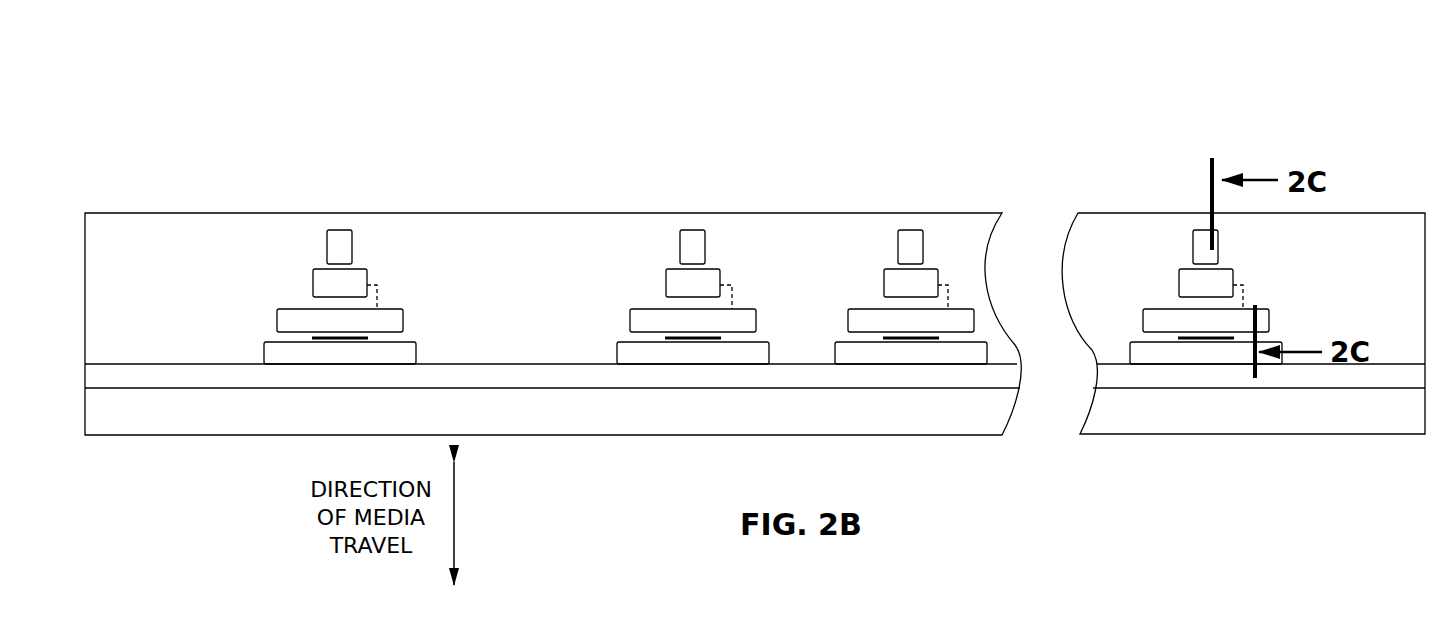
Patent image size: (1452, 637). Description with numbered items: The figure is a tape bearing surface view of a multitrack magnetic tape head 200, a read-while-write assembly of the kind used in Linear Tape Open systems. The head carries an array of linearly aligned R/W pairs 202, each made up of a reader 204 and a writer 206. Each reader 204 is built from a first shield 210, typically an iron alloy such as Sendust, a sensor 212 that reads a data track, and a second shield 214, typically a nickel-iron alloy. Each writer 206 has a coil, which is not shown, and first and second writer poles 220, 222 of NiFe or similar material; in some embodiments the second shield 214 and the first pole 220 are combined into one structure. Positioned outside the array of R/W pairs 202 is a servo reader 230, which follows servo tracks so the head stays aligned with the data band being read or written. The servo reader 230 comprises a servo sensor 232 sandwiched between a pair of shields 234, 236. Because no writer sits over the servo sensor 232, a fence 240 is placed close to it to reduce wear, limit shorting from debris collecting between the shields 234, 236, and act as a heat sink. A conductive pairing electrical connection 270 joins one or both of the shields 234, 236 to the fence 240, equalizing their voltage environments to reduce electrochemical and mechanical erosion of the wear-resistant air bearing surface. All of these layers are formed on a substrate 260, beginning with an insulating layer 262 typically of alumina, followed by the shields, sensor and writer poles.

The magnetic tape head 200 is at (163, 172).
The R/W pairs 202 is at (742, 253).
The reader 204 is at (664, 316).
The writer 206 is at (698, 265).
The first shield 210 is at (618, 352).
The sensor 212 is at (620, 336).
The second shield 214 is at (632, 320).
The first writer pole 220 is at (667, 285).
The second writer pole 222 is at (678, 255).
The servo reader 230 is at (712, 253).
The servo sensor 232 is at (272, 336).
The servo sensor shield 234 is at (263, 352).
The servo sensor shield 236 is at (277, 318).
The fence 240 is at (293, 267).
The substrate 260 is at (287, 424).
The insulating layer 262 is at (1062, 351).
The electrical connection 270 is at (376, 286).